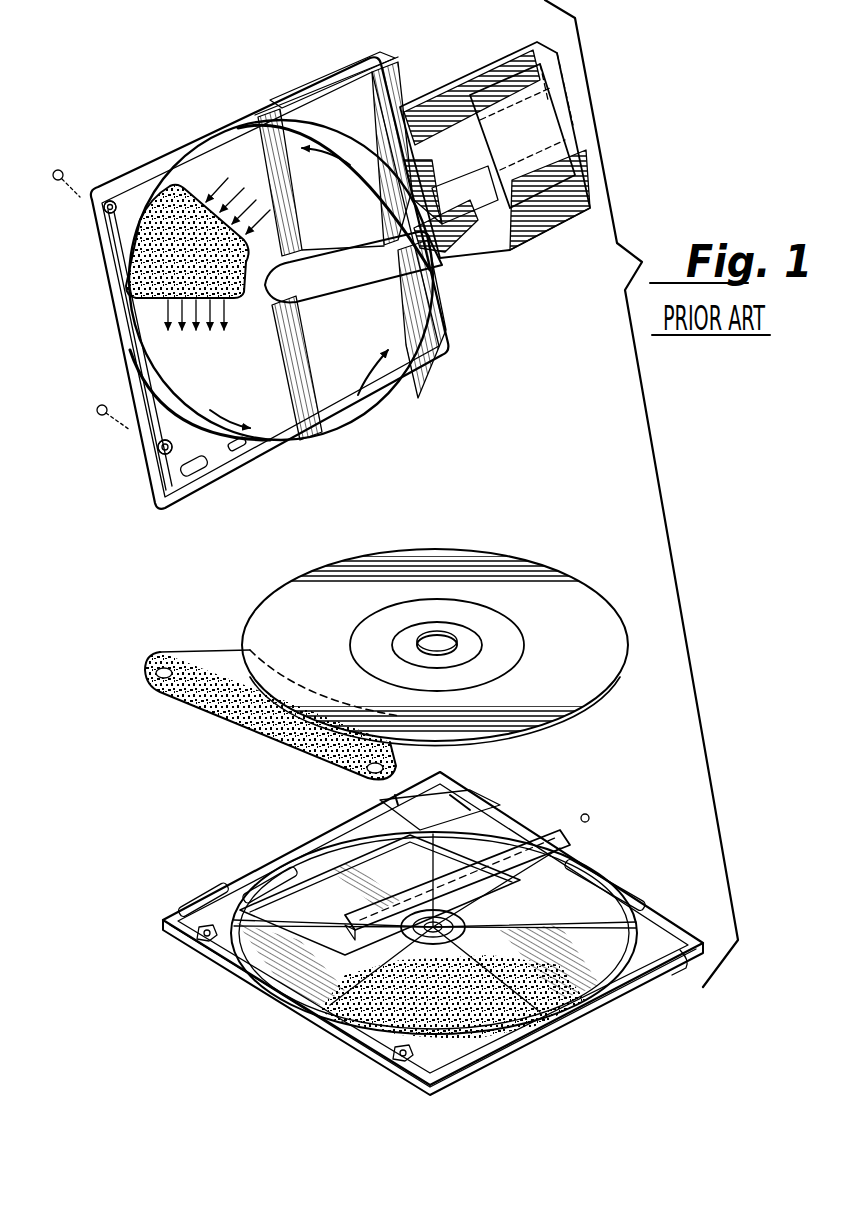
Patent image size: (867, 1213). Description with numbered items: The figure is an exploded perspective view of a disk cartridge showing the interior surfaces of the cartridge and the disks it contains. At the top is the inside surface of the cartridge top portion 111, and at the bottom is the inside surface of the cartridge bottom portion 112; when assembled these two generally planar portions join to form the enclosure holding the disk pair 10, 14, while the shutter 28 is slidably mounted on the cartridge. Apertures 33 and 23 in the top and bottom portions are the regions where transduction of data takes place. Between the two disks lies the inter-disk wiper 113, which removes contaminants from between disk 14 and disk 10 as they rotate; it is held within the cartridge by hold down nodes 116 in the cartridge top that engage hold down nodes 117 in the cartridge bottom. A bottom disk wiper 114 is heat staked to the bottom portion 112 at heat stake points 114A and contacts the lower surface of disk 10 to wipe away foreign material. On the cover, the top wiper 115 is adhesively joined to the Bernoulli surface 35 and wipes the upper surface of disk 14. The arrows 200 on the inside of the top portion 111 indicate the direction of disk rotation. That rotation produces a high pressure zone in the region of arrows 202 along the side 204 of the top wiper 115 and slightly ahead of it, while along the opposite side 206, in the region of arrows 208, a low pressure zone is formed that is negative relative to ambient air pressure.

The disk 10 is at (523, 725).
The disk 14 is at (548, 590).
The aperture 23 is at (520, 886).
The shutter 28 is at (454, 82).
The aperture 33 is at (334, 246).
The Bernoulli surface 35 is at (252, 136).
The cartridge top portion 111 is at (118, 338).
The cartridge bottom portion 112 is at (292, 1002).
The inter-disk wiper 113 is at (232, 706).
The bottom disk wiper 114 is at (470, 1010).
The heat stake points 114A is at (540, 948).
The top wiper 115 is at (168, 210).
The hold down nodes 116 is at (105, 215).
The hold down nodes 117 is at (200, 942).
The arrows 200 is at (352, 158).
The arrows 202 is at (250, 200).
The side of the top wiper 204 is at (242, 244).
The opposite side of disk wiper 206 is at (160, 297).
The arrows 208 is at (206, 334).